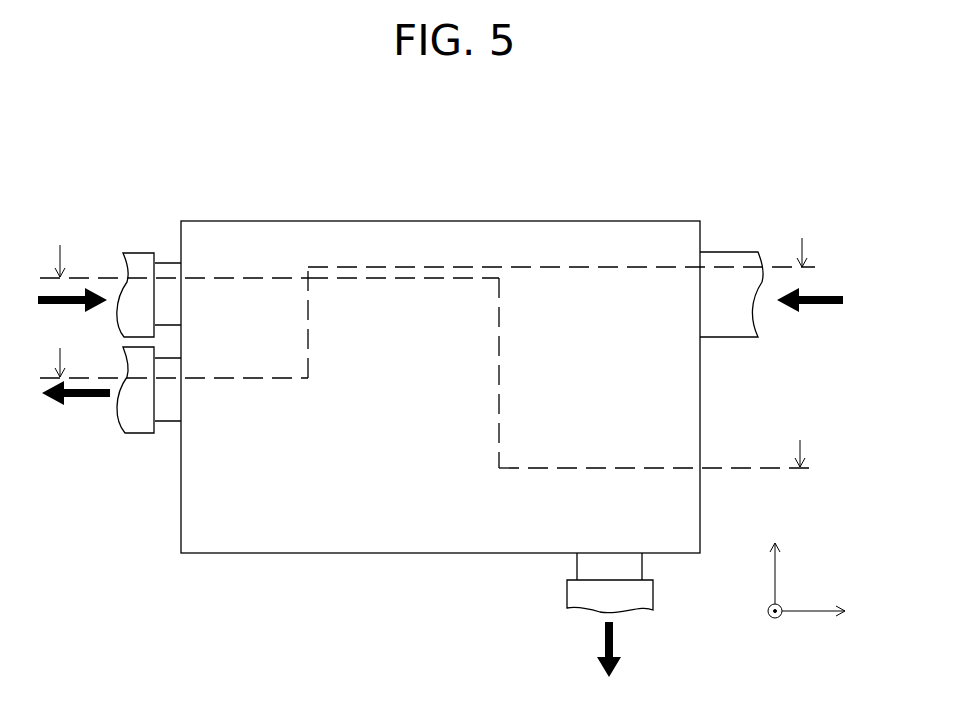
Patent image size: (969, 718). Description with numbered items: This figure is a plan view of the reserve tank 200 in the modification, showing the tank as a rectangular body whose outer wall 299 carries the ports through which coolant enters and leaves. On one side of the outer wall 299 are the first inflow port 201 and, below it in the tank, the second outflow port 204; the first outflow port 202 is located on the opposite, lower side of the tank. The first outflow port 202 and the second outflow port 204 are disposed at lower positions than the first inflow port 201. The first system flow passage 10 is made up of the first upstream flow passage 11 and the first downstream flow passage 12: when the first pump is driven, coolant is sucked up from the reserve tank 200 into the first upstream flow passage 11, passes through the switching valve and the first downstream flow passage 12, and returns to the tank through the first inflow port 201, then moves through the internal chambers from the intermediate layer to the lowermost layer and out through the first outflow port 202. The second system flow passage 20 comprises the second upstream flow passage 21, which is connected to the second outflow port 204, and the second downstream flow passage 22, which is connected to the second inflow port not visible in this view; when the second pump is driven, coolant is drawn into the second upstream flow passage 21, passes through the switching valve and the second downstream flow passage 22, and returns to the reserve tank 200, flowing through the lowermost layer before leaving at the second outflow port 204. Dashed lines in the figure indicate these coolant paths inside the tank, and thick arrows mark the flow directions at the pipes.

The reserve tank 200 is at (172, 160).
The outer wall 299 is at (179, 538).
The first system flow passage 10 is at (370, 412).
The first downstream flow passage 12 is at (130, 251).
The first upstream flow passage 11 is at (566, 599).
The second system flow passage 20 is at (439, 386).
The second upstream flow passage 21 is at (128, 433).
The second downstream flow passage 22 is at (713, 338).
The first inflow port 201 is at (170, 262).
The second outflow port 204 is at (175, 423).
The first outflow port 202 is at (577, 567).